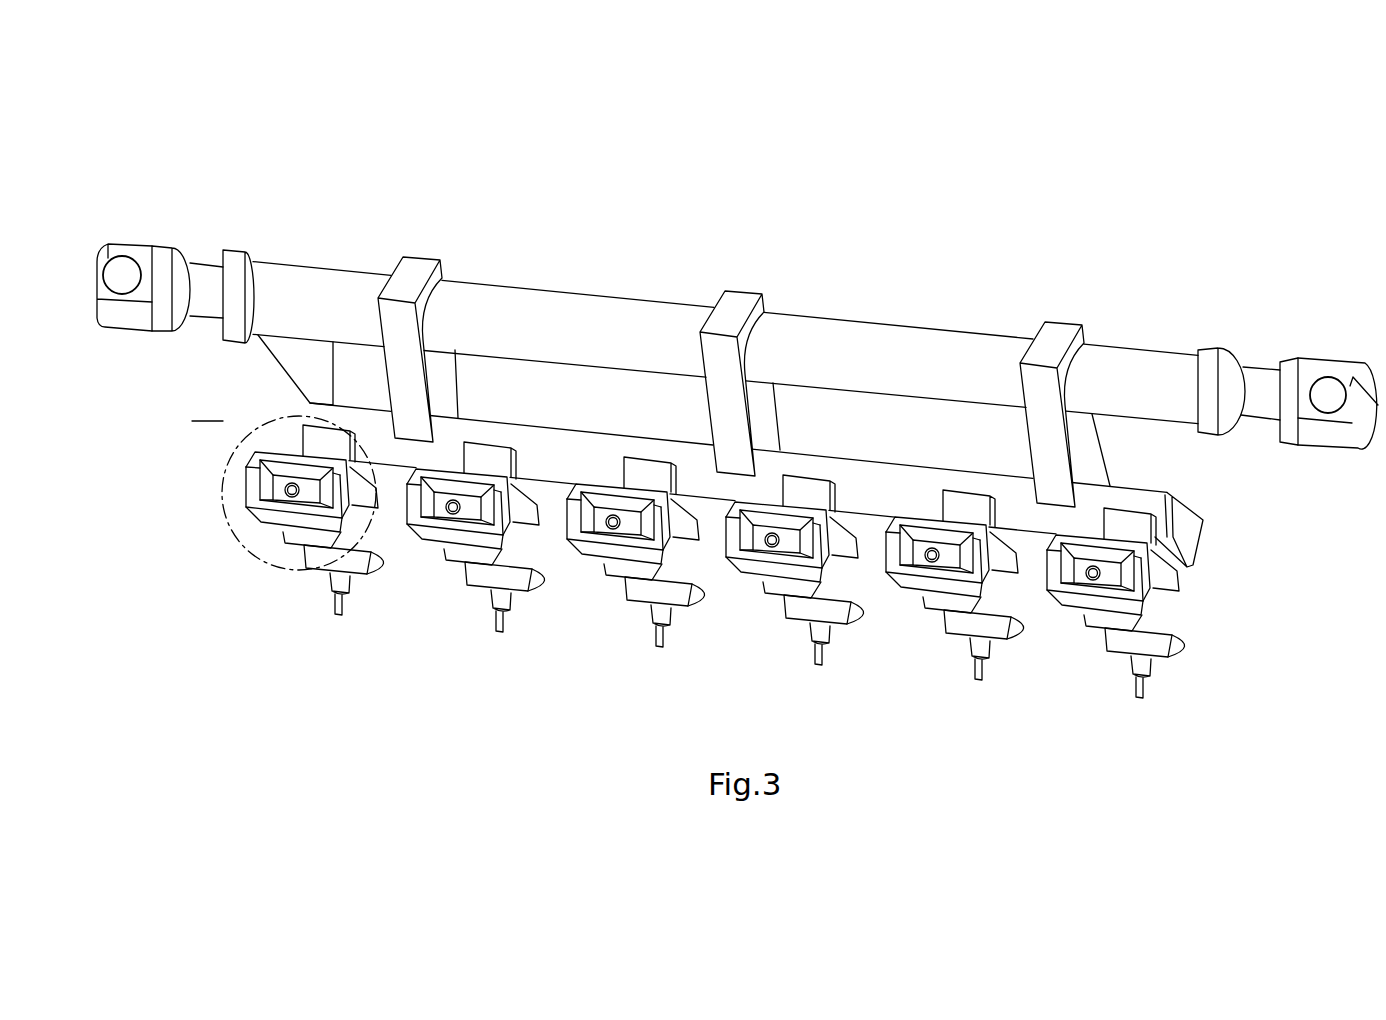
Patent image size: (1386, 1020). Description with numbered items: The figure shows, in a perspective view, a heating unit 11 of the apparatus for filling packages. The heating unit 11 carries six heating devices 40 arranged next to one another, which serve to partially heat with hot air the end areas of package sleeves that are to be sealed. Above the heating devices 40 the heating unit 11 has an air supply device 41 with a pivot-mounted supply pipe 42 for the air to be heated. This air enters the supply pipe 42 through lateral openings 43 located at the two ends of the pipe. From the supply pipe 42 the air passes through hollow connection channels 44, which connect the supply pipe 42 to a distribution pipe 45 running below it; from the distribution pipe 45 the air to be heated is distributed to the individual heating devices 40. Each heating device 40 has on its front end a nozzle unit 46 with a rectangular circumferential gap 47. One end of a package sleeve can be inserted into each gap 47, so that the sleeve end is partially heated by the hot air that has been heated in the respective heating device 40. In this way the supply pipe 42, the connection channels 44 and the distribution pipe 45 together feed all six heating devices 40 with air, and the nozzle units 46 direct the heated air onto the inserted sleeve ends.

The heating unit 11 is at (328, 145).
The heating device 40 is at (701, 595).
The air supply device 41 is at (644, 322).
The supply pipe 42 is at (932, 353).
The lateral opening 43 is at (122, 280).
The hollow connection channel 44 is at (412, 388).
The distribution pipe 45 is at (543, 453).
The nozzle unit 46 is at (213, 559).
The rectangular circumferential gap 47 is at (268, 488).